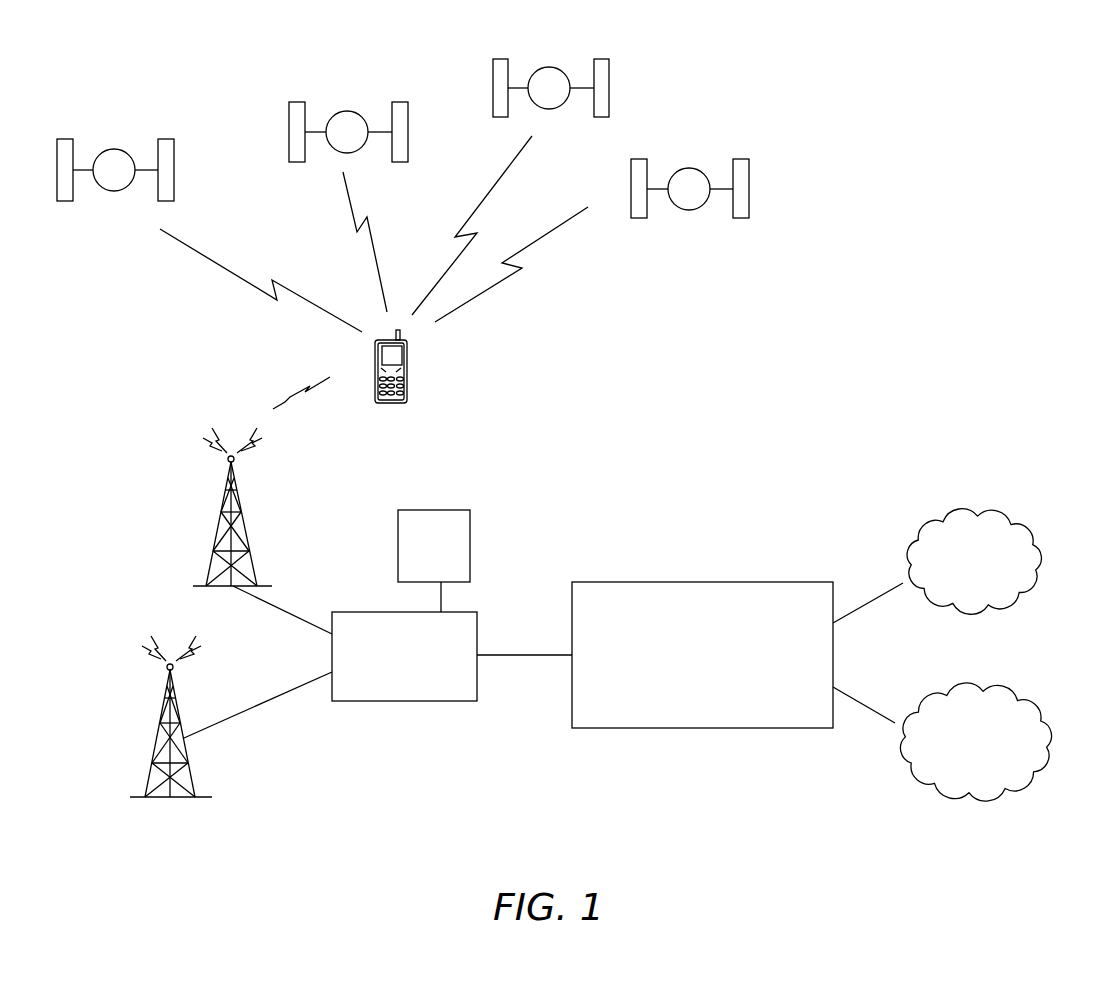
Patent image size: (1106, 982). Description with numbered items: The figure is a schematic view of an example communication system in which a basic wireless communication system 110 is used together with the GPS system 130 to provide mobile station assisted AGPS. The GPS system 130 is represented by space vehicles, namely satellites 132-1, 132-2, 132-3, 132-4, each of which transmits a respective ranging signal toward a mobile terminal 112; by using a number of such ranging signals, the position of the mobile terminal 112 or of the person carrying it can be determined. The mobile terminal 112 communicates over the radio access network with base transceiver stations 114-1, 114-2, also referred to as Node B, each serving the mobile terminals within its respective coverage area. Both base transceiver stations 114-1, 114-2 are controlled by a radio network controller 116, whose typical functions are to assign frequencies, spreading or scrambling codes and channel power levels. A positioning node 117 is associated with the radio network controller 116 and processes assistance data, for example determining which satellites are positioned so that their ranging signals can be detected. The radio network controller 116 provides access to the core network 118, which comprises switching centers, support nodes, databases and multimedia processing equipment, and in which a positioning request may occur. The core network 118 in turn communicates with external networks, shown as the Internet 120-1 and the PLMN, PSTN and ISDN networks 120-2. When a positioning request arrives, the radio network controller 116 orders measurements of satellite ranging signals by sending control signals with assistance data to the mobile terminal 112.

The wireless communication system 110 is at (660, 501).
The mobile terminal 112 is at (409, 378).
The base transceiver station 114-1 is at (250, 551).
The base transceiver station 114-2 is at (187, 797).
The radio network controller 116 is at (387, 701).
The positioning node 117 is at (470, 540).
The core network 118 is at (708, 728).
The external network 120-1 is at (1040, 502).
The external network 120-2 is at (1028, 793).
The GPS system 130 is at (736, 100).
The satellite 132-1 is at (113, 148).
The satellite 132-2 is at (297, 102).
The satellite 132-3 is at (633, 46).
The satellite 132-4 is at (745, 218).